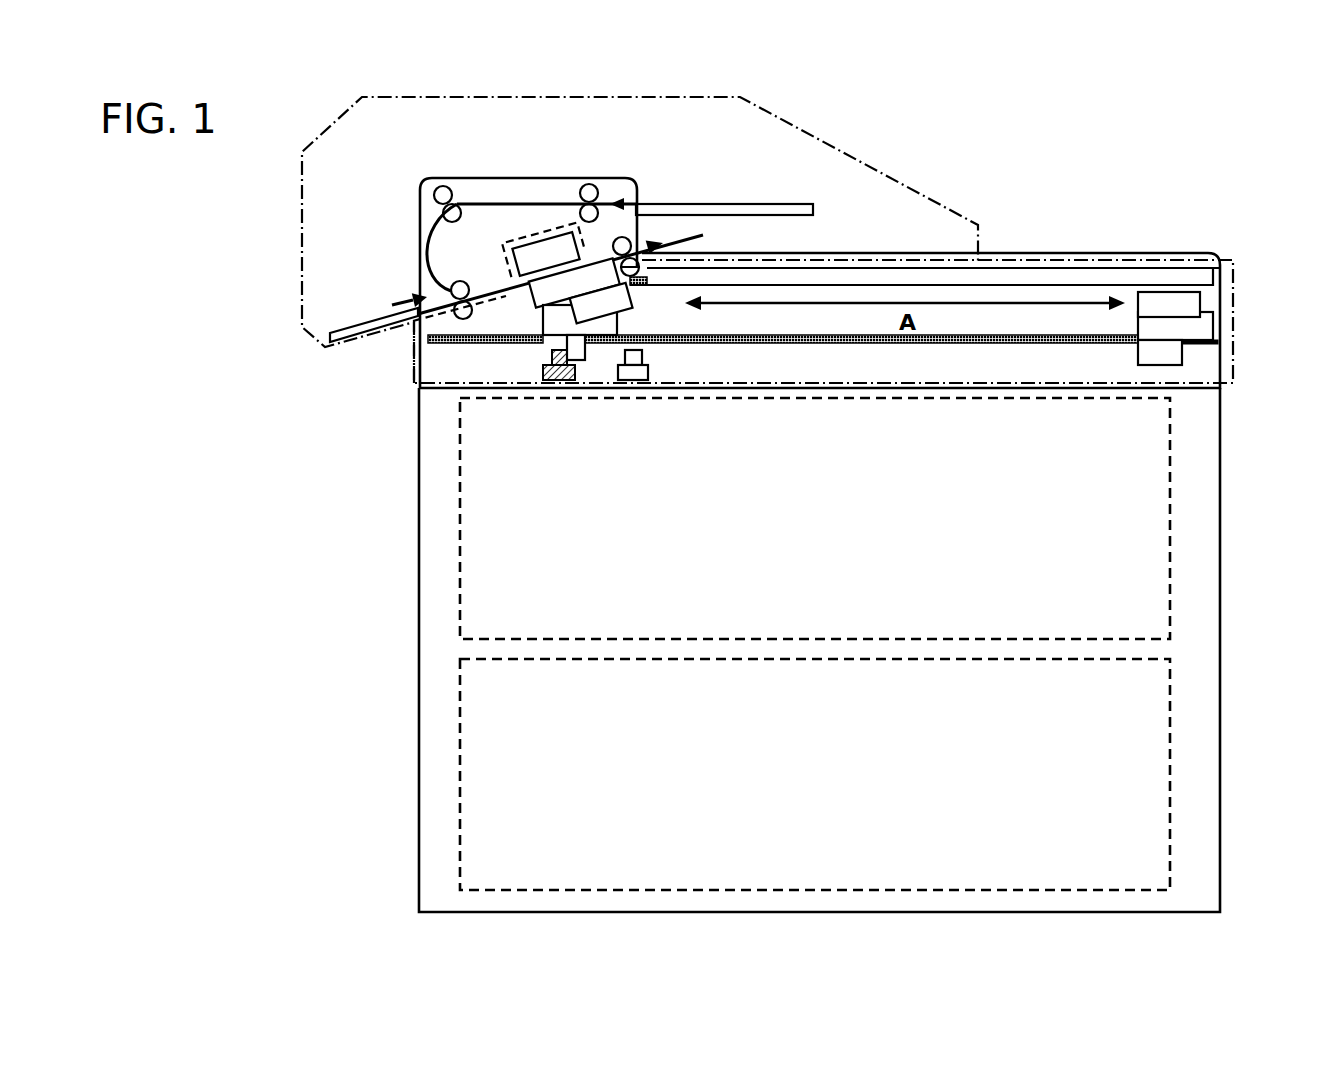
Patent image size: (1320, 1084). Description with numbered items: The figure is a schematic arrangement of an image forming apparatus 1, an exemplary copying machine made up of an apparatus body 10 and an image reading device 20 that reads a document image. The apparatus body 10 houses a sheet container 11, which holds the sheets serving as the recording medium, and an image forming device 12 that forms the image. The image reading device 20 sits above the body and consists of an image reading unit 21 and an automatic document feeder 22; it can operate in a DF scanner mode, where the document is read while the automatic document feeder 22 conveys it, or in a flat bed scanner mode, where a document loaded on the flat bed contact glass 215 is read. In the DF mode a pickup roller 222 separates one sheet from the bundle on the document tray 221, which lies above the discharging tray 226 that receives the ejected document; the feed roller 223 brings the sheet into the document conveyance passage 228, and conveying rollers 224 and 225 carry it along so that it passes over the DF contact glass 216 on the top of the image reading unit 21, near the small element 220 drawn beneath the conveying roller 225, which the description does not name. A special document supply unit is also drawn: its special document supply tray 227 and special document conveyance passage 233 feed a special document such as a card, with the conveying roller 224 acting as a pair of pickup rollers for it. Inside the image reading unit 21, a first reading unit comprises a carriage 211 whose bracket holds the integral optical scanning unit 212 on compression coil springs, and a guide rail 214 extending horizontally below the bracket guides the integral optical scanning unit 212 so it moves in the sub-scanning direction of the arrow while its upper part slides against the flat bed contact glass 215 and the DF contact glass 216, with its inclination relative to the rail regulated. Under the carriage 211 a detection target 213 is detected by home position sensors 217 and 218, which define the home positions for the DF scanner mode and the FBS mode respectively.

The image forming apparatus 1 is at (1111, 173).
The apparatus body 10 is at (1228, 661).
The sheet container 11 is at (1179, 783).
The image forming device 12 is at (1179, 583).
The image reading device 20 is at (1228, 362).
The image reading unit 21 is at (1241, 304).
The automatic document feeder 22 is at (817, 131).
The carriage 211 is at (606, 348).
The integral optical scanning unit 212 is at (548, 334).
The detection target 213 is at (583, 368).
The guide rail 214 is at (449, 349).
The flat bed contact glass 215 is at (1000, 265).
The DF contact glass 216 is at (517, 317).
The home position sensor 217 is at (562, 389).
The home position sensor 218 is at (641, 388).
The reading window 220 is at (646, 273).
The document tray 221 is at (760, 201).
The pickup roller 222 is at (581, 180).
The feed roller 223 is at (431, 188).
The conveying roller 224 is at (449, 279).
The conveying roller 225 is at (625, 236).
The discharging tray 226 is at (866, 250).
The special document supply tray 227 is at (357, 342).
The document conveyance passage 228 is at (496, 281).
The special document conveyance passage 233 is at (442, 299).